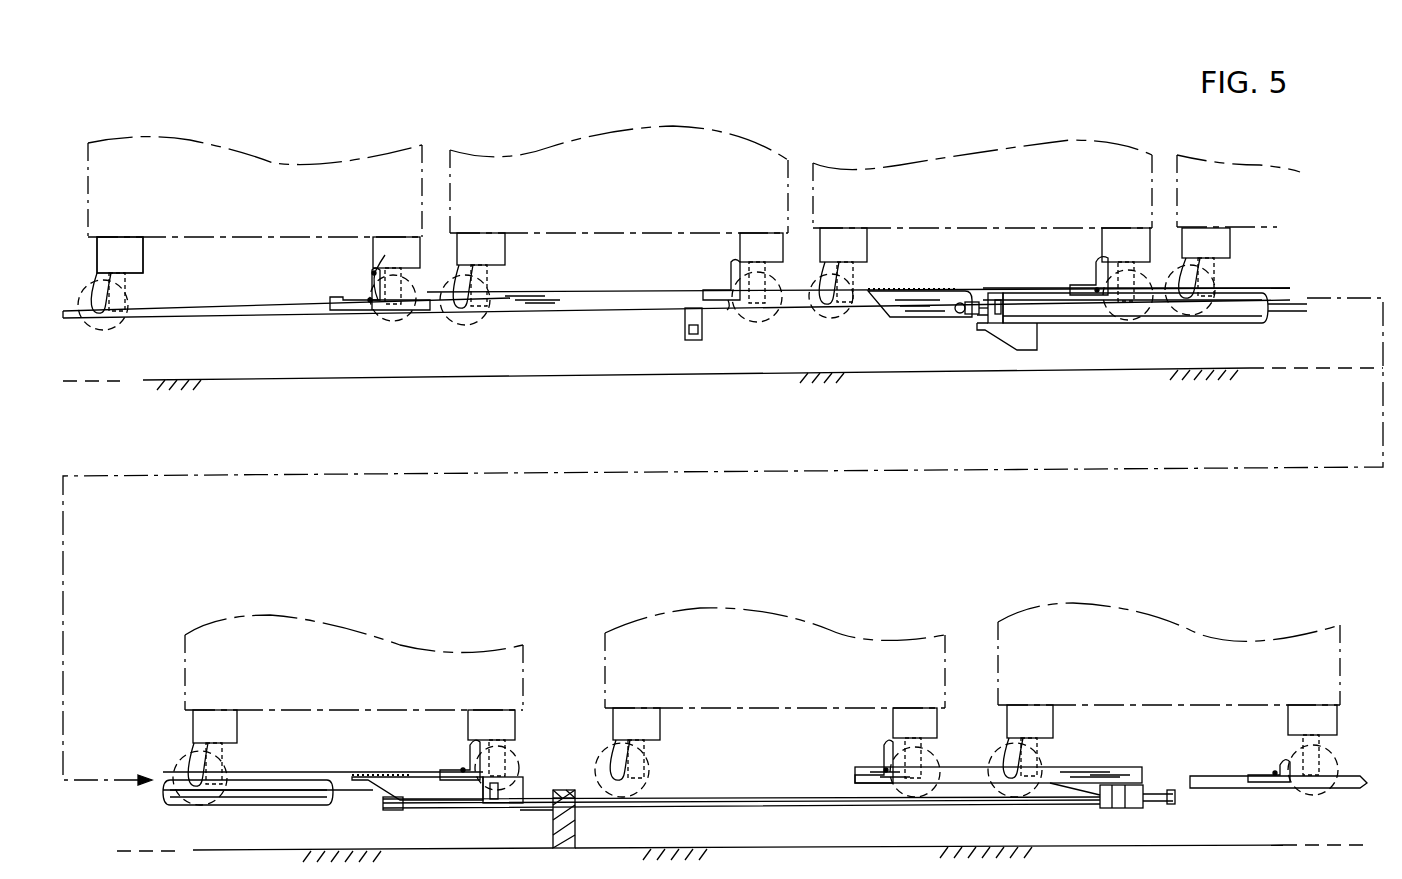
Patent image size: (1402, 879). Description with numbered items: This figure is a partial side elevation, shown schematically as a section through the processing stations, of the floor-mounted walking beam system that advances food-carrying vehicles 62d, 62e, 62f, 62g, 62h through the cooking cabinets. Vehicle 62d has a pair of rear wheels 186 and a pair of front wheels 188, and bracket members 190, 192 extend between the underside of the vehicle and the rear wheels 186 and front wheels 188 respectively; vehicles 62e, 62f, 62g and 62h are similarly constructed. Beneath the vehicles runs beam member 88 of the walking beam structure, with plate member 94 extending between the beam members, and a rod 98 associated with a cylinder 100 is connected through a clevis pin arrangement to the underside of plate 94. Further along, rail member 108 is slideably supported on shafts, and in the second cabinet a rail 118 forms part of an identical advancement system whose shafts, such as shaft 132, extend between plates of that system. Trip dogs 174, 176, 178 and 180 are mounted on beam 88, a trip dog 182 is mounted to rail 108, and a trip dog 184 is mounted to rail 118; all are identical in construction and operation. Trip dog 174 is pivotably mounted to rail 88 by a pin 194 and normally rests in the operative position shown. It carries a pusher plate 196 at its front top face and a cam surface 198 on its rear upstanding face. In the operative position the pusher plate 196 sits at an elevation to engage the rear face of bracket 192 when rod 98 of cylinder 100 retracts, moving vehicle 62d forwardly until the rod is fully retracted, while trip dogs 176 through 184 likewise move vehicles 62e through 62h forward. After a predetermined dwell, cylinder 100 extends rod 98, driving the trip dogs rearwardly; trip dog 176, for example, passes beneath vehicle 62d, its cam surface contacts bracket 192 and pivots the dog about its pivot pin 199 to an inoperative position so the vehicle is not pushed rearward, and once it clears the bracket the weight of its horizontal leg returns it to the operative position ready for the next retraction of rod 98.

The vehicle 62d is at (303, 165).
The vehicle 62e is at (632, 127).
The vehicle 62f is at (983, 143).
The vehicle 62g is at (343, 627).
The vehicle 62h is at (1193, 635).
The beam member 88 is at (545, 292).
The plate member 94 is at (898, 290).
The rod 98 is at (978, 330).
The cylinder 100 is at (1178, 328).
The rail member 108 is at (964, 762).
The rail 118 is at (1335, 770).
The shaft 132 is at (692, 797).
The trip dog 174 is at (360, 293).
The trip dog 176 is at (728, 287).
The trip dog 178 is at (1093, 288).
The trip dog 180 is at (462, 768).
The trip dog 182 is at (885, 762).
The trip dog 184 is at (1280, 766).
The rear wheel 186 is at (127, 300).
The front wheel 188 is at (418, 313).
The bracket member 190 is at (143, 262).
The bracket member 192 is at (370, 247).
The pin 194 is at (370, 300).
The pusher plate 196 is at (387, 250).
The cam surface 198 is at (373, 273).
The pivot pin 199 is at (727, 300).